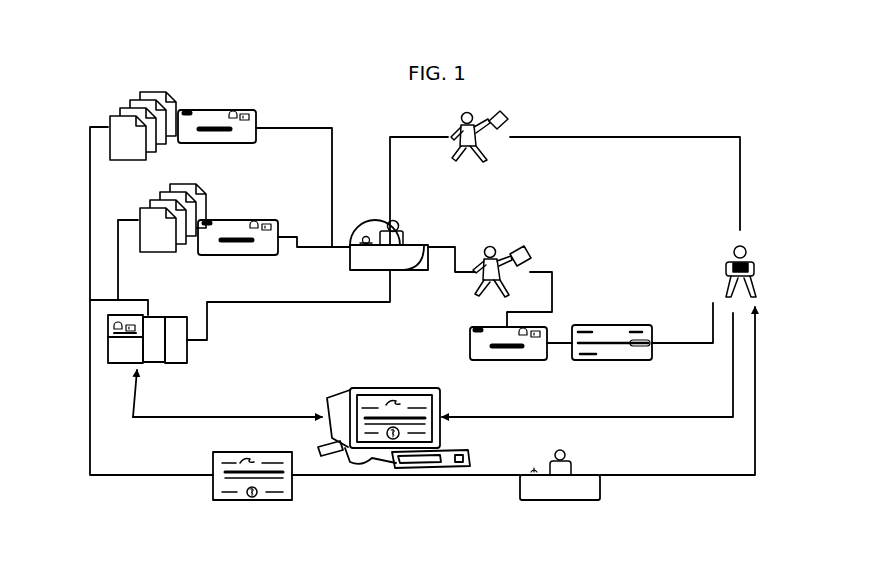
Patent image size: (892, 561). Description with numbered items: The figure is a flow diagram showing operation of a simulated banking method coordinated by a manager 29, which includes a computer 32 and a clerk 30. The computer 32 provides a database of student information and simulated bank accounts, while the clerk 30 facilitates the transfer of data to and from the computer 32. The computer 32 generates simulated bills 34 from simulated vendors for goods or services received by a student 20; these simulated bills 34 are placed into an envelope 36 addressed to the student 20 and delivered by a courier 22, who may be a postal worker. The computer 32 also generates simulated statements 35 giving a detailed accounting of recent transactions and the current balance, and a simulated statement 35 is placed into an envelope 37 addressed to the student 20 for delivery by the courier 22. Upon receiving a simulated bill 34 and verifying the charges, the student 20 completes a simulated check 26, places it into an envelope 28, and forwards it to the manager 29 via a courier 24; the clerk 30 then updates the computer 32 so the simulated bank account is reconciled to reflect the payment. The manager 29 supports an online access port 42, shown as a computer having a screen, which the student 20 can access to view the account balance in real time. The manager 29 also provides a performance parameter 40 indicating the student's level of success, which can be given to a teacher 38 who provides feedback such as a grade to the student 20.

The student 20 is at (768, 256).
The courier 22 is at (493, 103).
The courier 24 is at (537, 251).
The simulated check 26 is at (608, 318).
The envelope 28 is at (458, 343).
The manager 29 is at (279, 334).
The clerk 30 is at (414, 233).
The computer 32 is at (90, 324).
The simulated bills 34 is at (187, 184).
The simulated statements 35 is at (153, 83).
The envelope 36 is at (246, 214).
The envelope 37 is at (219, 96).
The teacher 38 is at (516, 504).
The performance parameter 40 is at (208, 505).
The online access port 42 is at (366, 382).